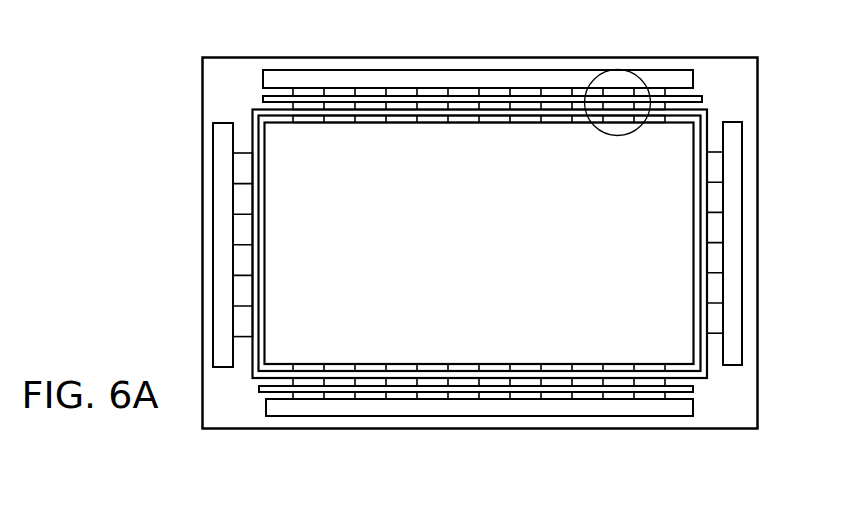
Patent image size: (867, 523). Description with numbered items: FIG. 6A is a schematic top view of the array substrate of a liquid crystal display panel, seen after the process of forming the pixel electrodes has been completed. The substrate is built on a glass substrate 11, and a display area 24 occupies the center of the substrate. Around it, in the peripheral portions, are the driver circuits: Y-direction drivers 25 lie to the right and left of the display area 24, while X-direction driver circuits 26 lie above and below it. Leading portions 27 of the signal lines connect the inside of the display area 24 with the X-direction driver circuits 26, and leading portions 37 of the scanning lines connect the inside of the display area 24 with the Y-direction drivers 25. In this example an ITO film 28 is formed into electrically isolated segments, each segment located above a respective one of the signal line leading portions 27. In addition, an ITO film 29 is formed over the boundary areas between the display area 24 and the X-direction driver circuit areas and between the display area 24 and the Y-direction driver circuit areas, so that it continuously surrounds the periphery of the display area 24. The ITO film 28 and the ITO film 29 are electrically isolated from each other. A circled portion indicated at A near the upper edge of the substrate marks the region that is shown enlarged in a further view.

The glass substrate 11 is at (680, 428).
The display area 24 is at (523, 350).
The Y-direction driver 25 is at (212, 280).
The X-direction driver circuit 26 is at (328, 74).
The leading portion of signal line 27 is at (371, 95).
The ITO film 28 is at (428, 98).
The ITO film 29 is at (427, 118).
The leading portion of scanning line 37 is at (710, 183).
The portion A is at (637, 77).